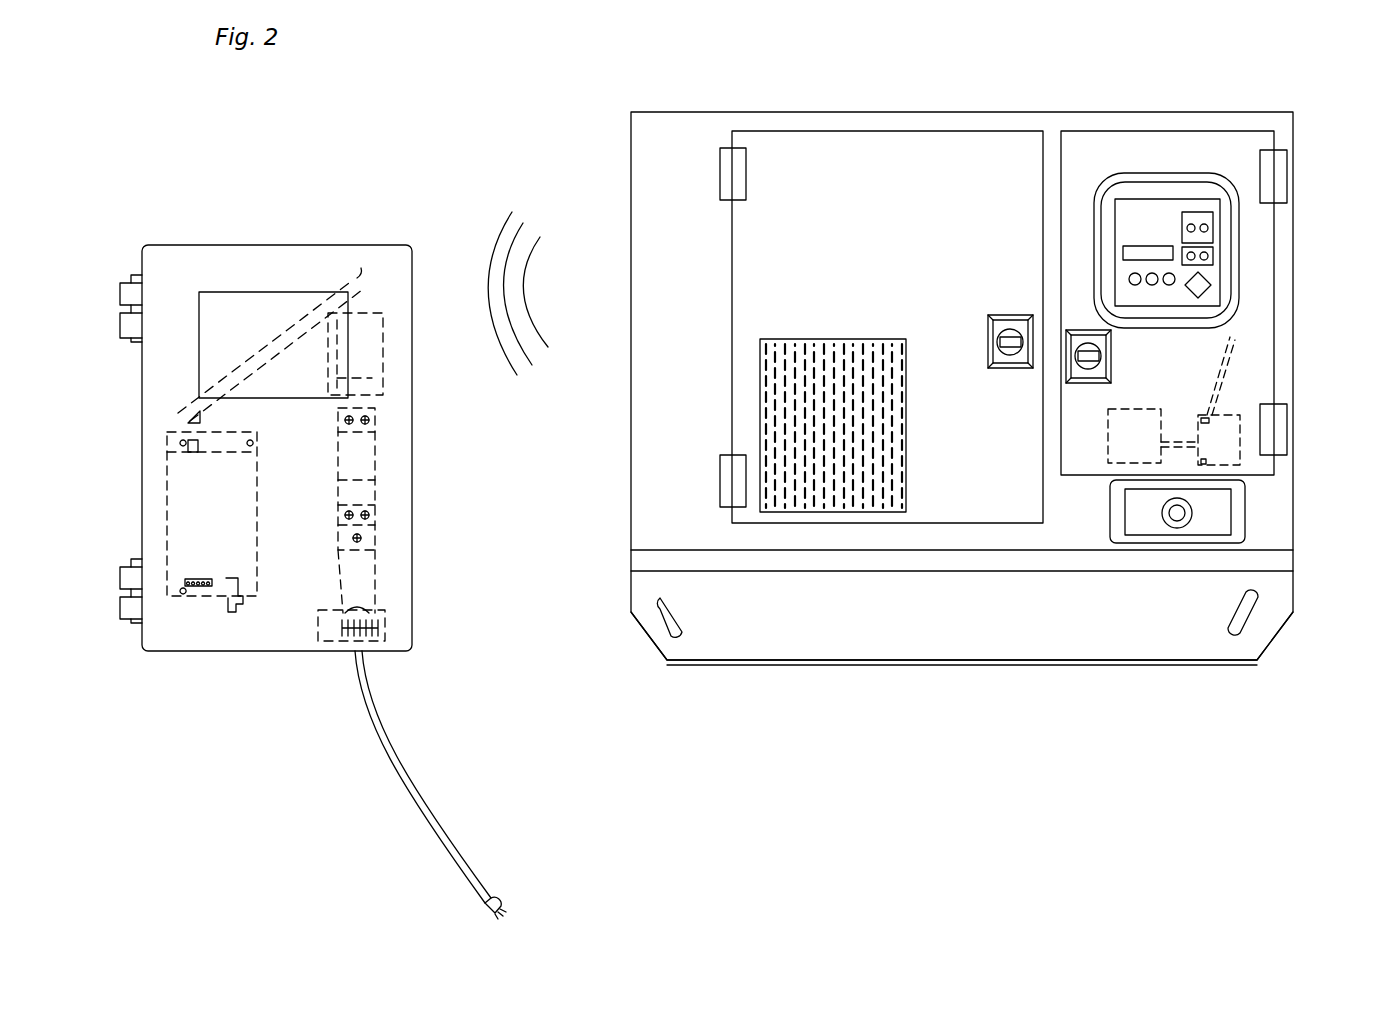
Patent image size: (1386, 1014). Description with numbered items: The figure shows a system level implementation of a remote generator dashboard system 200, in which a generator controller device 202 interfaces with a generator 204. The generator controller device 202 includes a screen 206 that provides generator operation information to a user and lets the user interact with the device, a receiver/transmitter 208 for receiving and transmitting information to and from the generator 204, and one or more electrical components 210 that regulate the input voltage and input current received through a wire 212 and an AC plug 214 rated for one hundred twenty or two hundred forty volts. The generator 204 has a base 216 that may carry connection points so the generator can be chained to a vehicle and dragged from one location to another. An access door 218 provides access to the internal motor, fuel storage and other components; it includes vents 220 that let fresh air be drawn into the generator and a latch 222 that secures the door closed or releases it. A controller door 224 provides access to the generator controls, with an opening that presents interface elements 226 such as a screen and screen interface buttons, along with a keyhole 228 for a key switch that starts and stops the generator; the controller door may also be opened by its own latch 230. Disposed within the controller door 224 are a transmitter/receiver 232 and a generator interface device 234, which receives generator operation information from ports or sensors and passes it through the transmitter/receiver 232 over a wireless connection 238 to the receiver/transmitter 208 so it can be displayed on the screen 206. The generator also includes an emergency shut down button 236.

The remote generator dashboard system 200 is at (494, 62).
The generator controller device 202 is at (167, 247).
The generator 204 is at (699, 112).
The screen 206 is at (230, 345).
The receiver/transmitter 208 is at (205, 490).
The electrical components 210 is at (365, 475).
The wire 212 is at (375, 728).
The AC plug 214 is at (485, 910).
The base 216 is at (631, 625).
The access door 218 is at (795, 160).
The vents 220 is at (790, 392).
The latch 222 is at (1000, 315).
The controller door 224 is at (1148, 148).
The interface elements 226 is at (1140, 245).
The keyhole 228 is at (1205, 230).
The latch 230 is at (1088, 385).
The transmitter/receiver 232 is at (1218, 432).
The generator interface device 234 is at (1131, 445).
The emergency shut down button 236 is at (1180, 513).
The wireless connection 238 is at (483, 253).